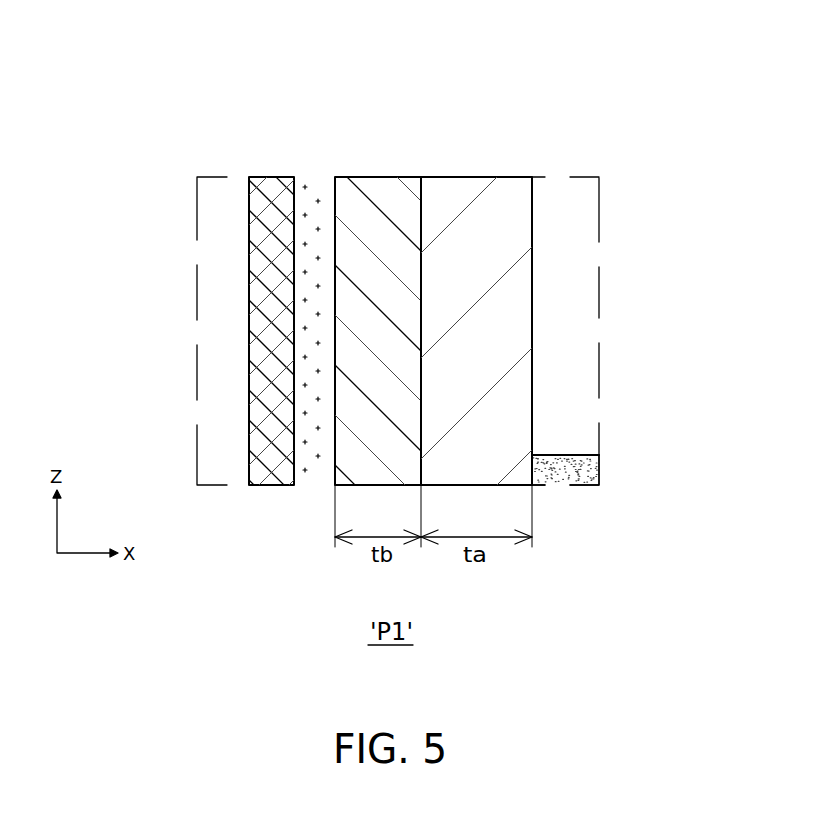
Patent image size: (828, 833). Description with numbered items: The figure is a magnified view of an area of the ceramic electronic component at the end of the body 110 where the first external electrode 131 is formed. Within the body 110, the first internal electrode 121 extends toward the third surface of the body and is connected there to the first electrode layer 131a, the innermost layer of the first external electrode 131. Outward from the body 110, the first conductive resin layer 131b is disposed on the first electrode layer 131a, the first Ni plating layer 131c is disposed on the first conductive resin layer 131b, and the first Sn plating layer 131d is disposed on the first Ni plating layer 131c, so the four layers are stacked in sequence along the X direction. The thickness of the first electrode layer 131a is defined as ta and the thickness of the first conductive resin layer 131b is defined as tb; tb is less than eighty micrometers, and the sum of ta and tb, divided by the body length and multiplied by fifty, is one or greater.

The body 110 is at (567, 197).
The first internal electrode 121 is at (592, 470).
The first external electrode 131 is at (492, 84).
The first electrode layer 131a is at (458, 193).
The first conductive resin layer 131b is at (382, 190).
The first Ni plating layer 131c is at (312, 190).
The first Sn plating layer 131d is at (271, 186).